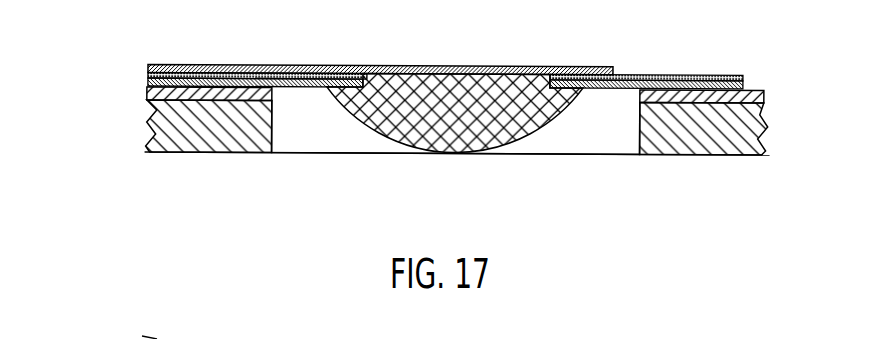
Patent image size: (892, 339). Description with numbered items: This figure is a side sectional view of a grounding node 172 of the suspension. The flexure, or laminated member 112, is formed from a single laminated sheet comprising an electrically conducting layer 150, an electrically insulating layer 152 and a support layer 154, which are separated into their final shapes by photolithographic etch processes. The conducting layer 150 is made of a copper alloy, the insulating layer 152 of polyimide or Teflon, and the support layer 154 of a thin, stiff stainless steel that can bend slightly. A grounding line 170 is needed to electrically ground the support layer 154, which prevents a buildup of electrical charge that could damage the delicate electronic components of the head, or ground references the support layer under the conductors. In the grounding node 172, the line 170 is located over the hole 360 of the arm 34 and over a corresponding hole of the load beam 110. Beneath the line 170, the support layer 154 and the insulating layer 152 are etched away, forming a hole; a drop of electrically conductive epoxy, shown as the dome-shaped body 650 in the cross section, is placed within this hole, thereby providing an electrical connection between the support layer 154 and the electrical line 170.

The arm 34 is at (223, 147).
The load beam 110 is at (147, 92).
The flexure 112 is at (146, 88).
The electrically conducting layer 150 is at (607, 67).
The electrically insulating layer 152 is at (630, 77).
The support layer 154 is at (698, 81).
The grounding line 170 is at (240, 64).
The grounding node 172 is at (502, 66).
The hole 360 is at (337, 140).
The dome 650 is at (470, 143).